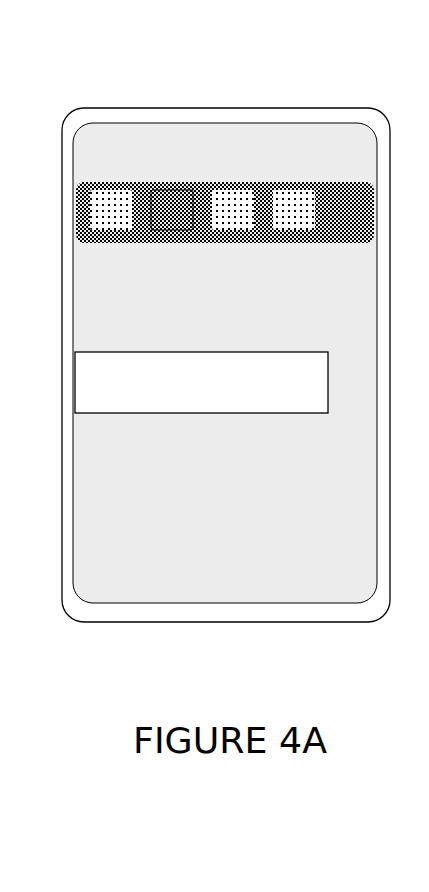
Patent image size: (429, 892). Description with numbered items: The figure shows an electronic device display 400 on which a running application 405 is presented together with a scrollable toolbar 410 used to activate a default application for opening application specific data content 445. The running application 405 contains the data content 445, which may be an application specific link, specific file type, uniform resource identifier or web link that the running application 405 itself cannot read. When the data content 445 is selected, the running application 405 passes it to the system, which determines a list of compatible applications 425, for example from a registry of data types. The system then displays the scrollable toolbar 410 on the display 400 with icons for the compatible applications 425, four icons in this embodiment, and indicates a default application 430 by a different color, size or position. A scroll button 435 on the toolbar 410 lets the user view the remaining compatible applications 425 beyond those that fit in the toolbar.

The display 400 is at (104, 57).
The running application 405 is at (160, 562).
The scrollable toolbar 410 is at (225, 220).
The compatible application 425 is at (291, 183).
The default application 430 is at (170, 183).
The scroll button 435 is at (338, 224).
The data content 445 is at (121, 352).